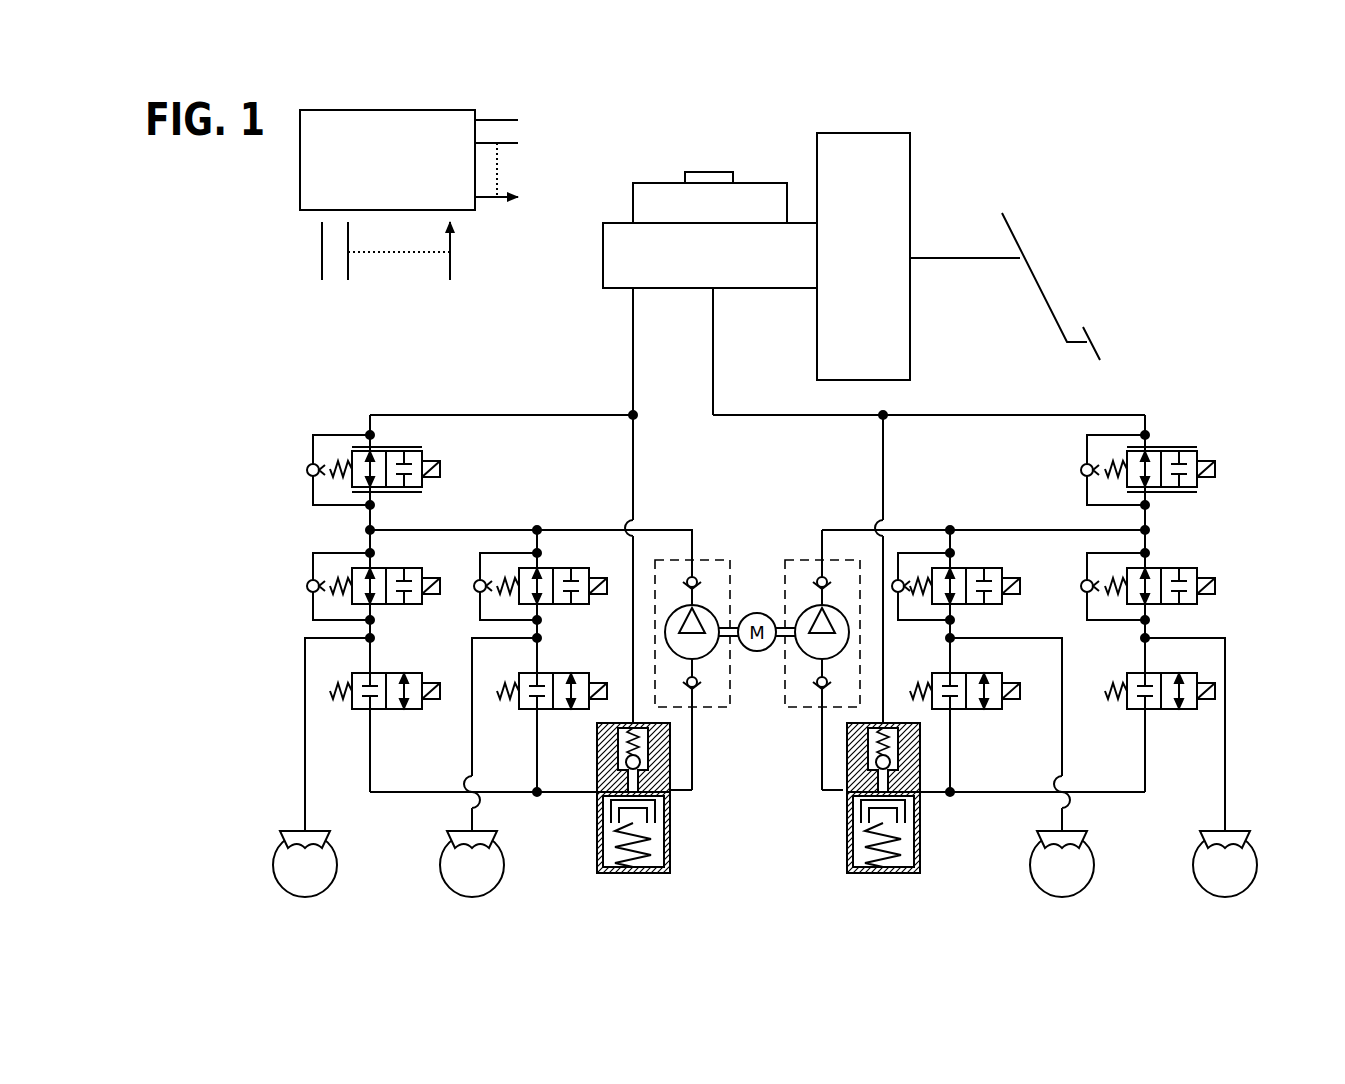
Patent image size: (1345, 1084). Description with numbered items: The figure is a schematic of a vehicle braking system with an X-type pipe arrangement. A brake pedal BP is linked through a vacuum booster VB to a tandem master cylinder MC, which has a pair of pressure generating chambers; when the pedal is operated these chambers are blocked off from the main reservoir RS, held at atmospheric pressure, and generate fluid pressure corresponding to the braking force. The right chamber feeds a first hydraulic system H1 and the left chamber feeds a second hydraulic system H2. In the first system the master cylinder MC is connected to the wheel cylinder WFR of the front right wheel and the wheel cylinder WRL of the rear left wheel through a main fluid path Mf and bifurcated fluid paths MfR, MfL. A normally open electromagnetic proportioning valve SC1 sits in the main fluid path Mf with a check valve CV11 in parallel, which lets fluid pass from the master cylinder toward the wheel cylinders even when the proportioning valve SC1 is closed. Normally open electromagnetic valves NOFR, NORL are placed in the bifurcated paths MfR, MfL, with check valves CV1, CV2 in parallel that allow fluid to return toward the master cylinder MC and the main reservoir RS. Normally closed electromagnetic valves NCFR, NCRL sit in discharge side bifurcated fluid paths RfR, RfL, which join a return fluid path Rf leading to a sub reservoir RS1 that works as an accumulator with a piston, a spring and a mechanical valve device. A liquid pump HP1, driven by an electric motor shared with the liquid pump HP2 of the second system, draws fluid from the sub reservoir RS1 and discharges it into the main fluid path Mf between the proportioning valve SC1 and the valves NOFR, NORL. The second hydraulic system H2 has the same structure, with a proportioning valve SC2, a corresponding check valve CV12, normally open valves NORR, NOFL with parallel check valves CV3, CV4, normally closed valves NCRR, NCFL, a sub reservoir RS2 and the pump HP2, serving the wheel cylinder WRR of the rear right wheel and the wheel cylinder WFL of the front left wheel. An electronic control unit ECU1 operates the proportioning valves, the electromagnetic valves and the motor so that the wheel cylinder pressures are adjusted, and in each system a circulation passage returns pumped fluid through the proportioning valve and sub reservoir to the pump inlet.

The electronic control unit ECU1 is at (409, 195).
The main reservoir RS is at (667, 183).
The vacuum booster VB is at (910, 158).
The brake pedal BP is at (1018, 246).
The master cylinder MC is at (603, 262).
The first hydraulic system H1 is at (1200, 377).
The second hydraulic system H2 is at (300, 386).
The main fluid path Mf is at (992, 413).
The bifurcated fluid path MfR is at (1148, 543).
The bifurcated fluid path MfL is at (953, 540).
The proportioning valve SC1 is at (1212, 466).
The proportioning valve SC2 is at (442, 466).
The check valve CV11 is at (1081, 470).
The check valve CV12 is at (307, 468).
The check valve CV1 is at (1084, 585).
The check valve CV2 is at (900, 598).
The check valve CV3 is at (307, 586).
The check valve CV4 is at (476, 594).
The electromagnetic valve NORR is at (435, 560).
The electromagnetic valve NOFL is at (574, 606).
The electromagnetic valve NORL is at (992, 604).
The electromagnetic valve NOFR is at (1183, 607).
The electromagnetic valve NCRR is at (387, 713).
The electromagnetic valve NCFL is at (529, 713).
The electromagnetic valve NCRL is at (975, 713).
The electromagnetic valve NCFR is at (1135, 713).
The liquid pump HP1 is at (806, 560).
The liquid pump HP2 is at (708, 560).
The sub reservoir RS1 is at (842, 837).
The sub reservoir RS2 is at (671, 837).
The return fluid path Rf is at (933, 795).
The bifurcated fluid path RfR is at (1147, 772).
The bifurcated fluid path RfL is at (952, 768).
The wheel cylinder WRR is at (290, 830).
The wheel cylinder WFL is at (455, 830).
The wheel cylinder WRL is at (1076, 830).
The wheel cylinder WFR is at (1238, 833).